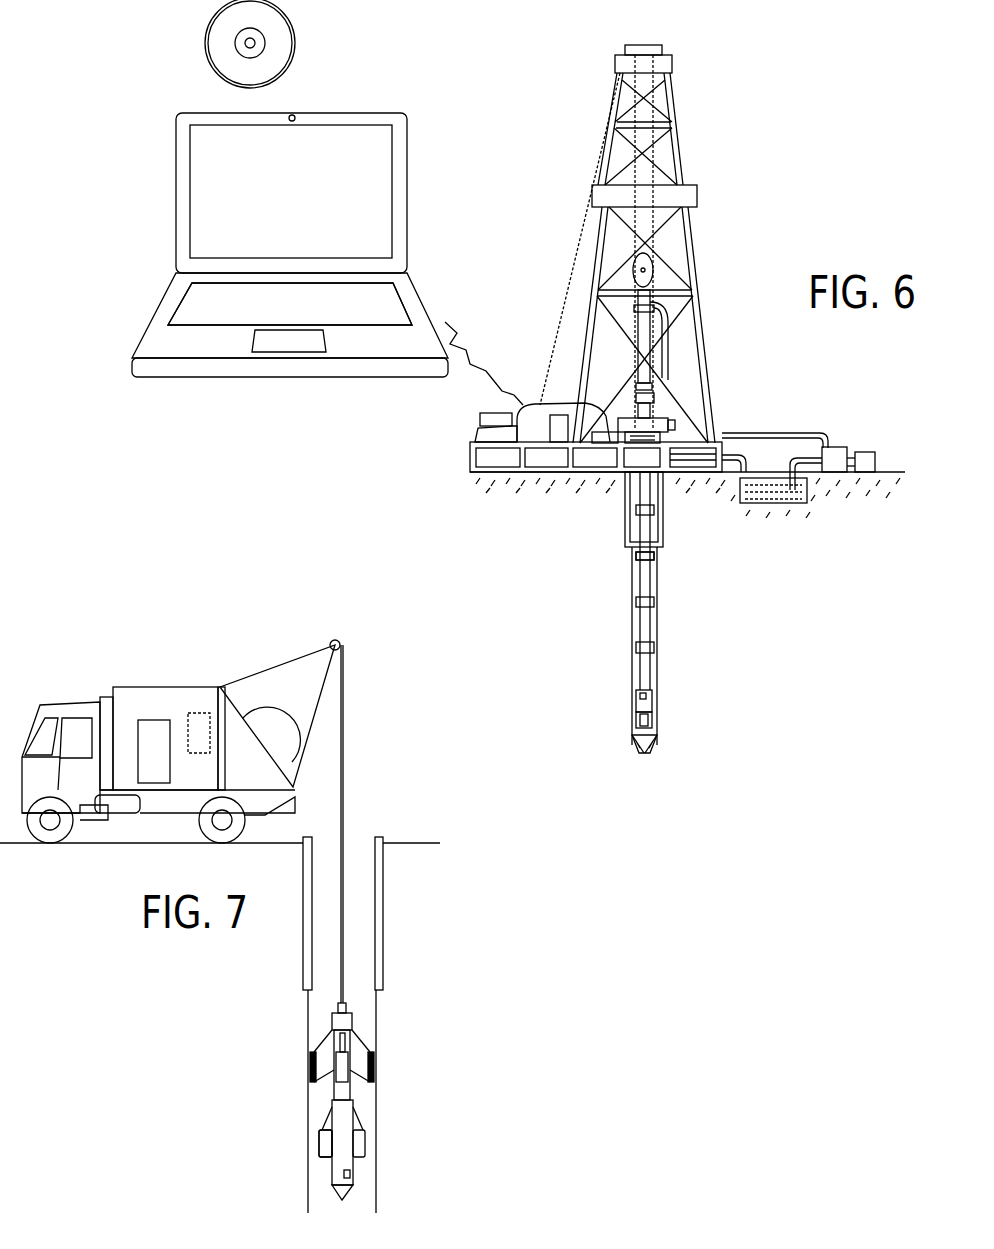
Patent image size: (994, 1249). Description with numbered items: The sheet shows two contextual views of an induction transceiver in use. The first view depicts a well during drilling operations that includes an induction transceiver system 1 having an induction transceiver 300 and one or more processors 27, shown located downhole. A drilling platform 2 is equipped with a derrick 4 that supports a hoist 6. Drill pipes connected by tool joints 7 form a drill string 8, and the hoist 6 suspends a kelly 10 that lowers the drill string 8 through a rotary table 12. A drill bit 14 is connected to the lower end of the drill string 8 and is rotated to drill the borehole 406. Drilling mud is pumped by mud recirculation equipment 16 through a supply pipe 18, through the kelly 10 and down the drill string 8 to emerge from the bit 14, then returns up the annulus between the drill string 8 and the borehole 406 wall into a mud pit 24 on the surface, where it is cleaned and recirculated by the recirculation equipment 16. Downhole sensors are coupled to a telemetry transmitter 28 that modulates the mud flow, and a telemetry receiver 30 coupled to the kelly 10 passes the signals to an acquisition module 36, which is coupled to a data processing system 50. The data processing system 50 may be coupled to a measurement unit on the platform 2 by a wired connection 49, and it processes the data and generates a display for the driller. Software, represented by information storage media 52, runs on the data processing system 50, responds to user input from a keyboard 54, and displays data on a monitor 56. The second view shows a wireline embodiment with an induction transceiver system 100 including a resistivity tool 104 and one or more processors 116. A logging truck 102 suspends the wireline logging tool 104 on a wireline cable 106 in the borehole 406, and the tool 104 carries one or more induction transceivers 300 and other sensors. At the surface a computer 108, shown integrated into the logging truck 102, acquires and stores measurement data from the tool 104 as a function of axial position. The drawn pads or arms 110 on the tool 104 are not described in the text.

In FIG. 6, the induction transceiver system 1 is at (610, 658).
In FIG. 6, the drilling platform 2 is at (470, 445).
In FIG. 6, the derrick 4 is at (683, 160).
In FIG. 6, the hoist 6 is at (660, 270).
In FIG. 6, the tool joints 7 is at (637, 552).
In FIG. 6, the drill string 8 is at (640, 568).
In FIG. 6, the kelly 10 is at (645, 325).
In FIG. 6, the rotary table 12 is at (660, 418).
In FIG. 6, the drill bit 14 is at (657, 740).
In FIG. 6, the mud recirculation equipment 16 is at (832, 447).
In FIG. 6, the supply pipe 18 is at (780, 433).
In FIG. 6, the mud pit 24 is at (805, 495).
In FIG. 6, the processors 27 is at (637, 695).
In FIG. 6, the telemetry transmitter 28 is at (652, 700).
In FIG. 6, the telemetry receiver 30 is at (652, 383).
In FIG. 6, the acquisition module 36 is at (565, 415).
In FIG. 6, the wired connection 49 is at (463, 350).
In FIG. 6, the data processing system 50 is at (276, 253).
In FIG. 6, the information storage media 52 is at (297, 42).
In FIG. 6, the keyboard 54 is at (394, 326).
In FIG. 6, the monitor 56 is at (313, 186).
In FIG. 7, the induction transceiver system 100 is at (424, 993).
In FIG. 7, the logging truck 102 is at (132, 685).
In FIG. 7, the wireline logging tool 104 is at (335, 1175).
In FIG. 7, the wireline cable 106 is at (344, 830).
In FIG. 7, the computer 108 is at (204, 712).
In FIG. 7, the centralizer arms / pads 110 is at (332, 1072).
In FIG. 7, the processors 116 is at (350, 1173).
In FIG. 6, the induction transceiver 300 is at (637, 718).
In FIG. 7, the induction transceiver 300 is at (352, 1025).
In FIG. 6, the borehole 406 is at (657, 560).
In FIG. 7, the borehole 406 is at (305, 1005).